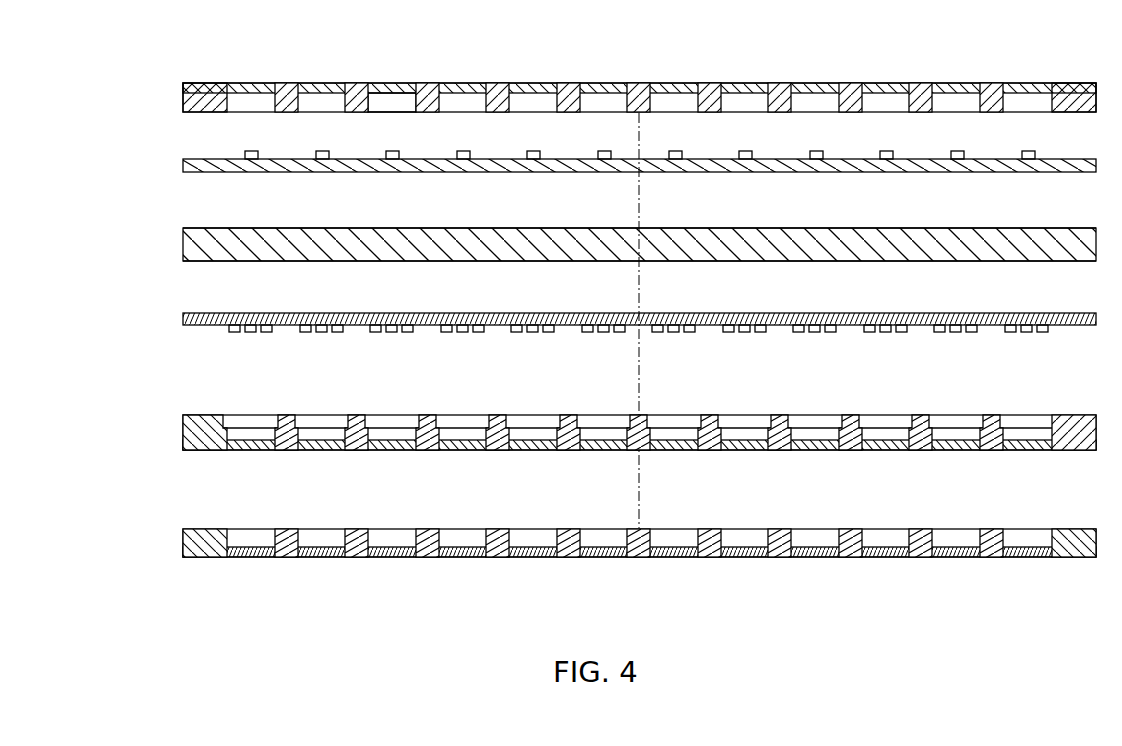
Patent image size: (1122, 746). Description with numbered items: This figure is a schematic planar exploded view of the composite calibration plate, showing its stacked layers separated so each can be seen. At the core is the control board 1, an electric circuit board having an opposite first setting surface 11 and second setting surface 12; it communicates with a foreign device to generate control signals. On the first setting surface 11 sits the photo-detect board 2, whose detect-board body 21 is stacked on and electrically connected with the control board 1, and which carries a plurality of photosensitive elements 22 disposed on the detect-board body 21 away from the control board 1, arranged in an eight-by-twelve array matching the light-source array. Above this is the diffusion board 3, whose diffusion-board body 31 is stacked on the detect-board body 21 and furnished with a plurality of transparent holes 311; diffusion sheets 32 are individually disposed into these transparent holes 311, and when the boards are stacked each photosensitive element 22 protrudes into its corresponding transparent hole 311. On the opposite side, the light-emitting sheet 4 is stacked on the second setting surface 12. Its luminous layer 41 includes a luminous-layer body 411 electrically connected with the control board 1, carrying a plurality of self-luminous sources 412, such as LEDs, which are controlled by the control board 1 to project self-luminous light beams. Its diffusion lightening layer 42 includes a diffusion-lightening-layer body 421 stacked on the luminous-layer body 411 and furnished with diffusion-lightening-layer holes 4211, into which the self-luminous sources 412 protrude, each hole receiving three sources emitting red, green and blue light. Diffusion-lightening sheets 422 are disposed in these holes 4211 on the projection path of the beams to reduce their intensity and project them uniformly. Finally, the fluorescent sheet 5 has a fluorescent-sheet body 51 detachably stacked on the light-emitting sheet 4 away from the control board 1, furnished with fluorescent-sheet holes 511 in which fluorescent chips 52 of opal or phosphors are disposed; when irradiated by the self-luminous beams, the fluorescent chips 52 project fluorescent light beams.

The control board 1 is at (609, 245).
The first setting surface 11 is at (757, 228).
The second setting surface 12 is at (745, 261).
The photo-detect board 2 is at (611, 176).
The detect-board body 21 is at (243, 165).
The photosensitive element 22 is at (321, 160).
The diffusion board 3 is at (609, 75).
The diffusion-board body 31 is at (435, 88).
The transparent hole 311 is at (407, 100).
The diffusion sheet 32 is at (378, 83).
The light-emitting sheet 4 is at (104, 327).
The luminous layer 41 is at (608, 305).
The luminous-layer body 411 is at (447, 314).
The self-luminous source 412 is at (390, 326).
The diffusion lightening layer 42 is at (608, 404).
The diffusion-lightening-layer body 421 is at (205, 430).
The diffusion-lightening-layer hole 4211 is at (533, 439).
The diffusion-lightening sheet 422 is at (382, 442).
The fluorescent sheet 5 is at (609, 578).
The fluorescent-sheet body 51 is at (425, 543).
The fluorescent-sheet hole 511 is at (493, 541).
The fluorescent chip 52 is at (462, 551).